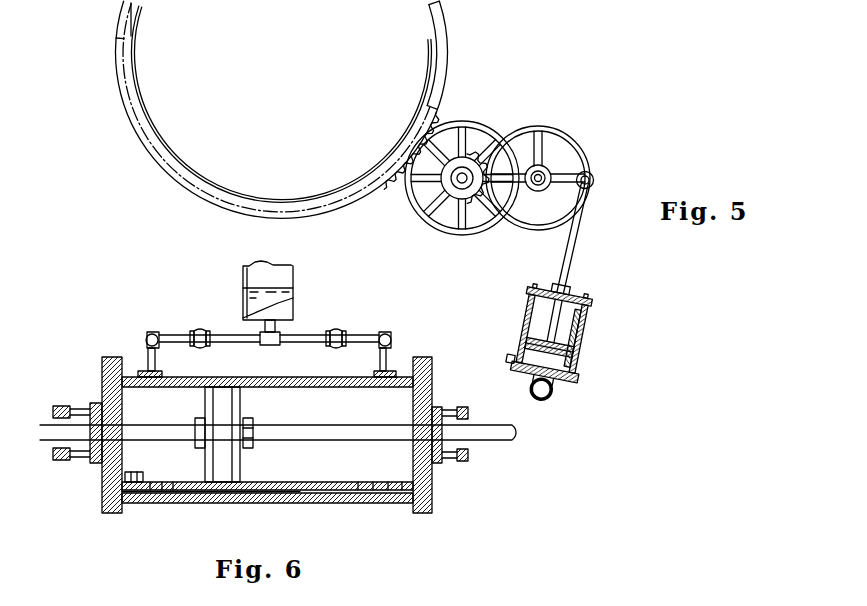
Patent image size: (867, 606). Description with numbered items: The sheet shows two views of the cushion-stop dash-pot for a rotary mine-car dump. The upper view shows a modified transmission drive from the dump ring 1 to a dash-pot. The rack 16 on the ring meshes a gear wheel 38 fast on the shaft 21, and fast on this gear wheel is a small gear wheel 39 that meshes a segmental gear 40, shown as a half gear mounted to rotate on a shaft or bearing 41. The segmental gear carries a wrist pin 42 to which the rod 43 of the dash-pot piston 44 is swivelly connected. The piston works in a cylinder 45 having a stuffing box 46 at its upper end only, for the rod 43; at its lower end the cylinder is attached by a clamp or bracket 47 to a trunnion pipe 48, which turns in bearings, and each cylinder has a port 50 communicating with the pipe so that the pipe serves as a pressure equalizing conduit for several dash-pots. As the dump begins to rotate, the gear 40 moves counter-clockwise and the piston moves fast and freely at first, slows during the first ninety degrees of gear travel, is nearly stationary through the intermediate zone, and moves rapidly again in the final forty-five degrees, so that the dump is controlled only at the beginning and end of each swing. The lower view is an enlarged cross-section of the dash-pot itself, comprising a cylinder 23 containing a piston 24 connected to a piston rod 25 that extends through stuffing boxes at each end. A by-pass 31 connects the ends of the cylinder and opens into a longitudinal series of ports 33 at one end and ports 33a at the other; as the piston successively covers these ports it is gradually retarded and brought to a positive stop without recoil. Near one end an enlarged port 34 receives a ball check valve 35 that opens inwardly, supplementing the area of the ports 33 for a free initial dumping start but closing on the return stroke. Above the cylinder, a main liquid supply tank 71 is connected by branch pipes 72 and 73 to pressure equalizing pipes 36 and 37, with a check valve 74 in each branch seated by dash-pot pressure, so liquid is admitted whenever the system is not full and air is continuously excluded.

In FIG. 5, the dump ring 1 is at (447, 51).
In FIG. 5, the rack 16 is at (368, 196).
In FIG. 5, the shaft 21 is at (460, 187).
In FIG. 5, the gear wheel 38 is at (486, 230).
In FIG. 5, the small gear wheel 39 is at (471, 162).
In FIG. 5, the segmental gear 40 is at (567, 141).
In FIG. 5, the shaft or bearing 41 is at (541, 191).
In FIG. 5, the wrist pin 42 is at (594, 179).
In FIG. 5, the rod 43 is at (581, 253).
In FIG. 5, the cylinder 45 is at (533, 330).
In FIG. 5, the stuffing box 46 is at (580, 283).
In FIG. 5, the by-pass 31 is at (600, 338).
In FIG. 6, the by-pass 31 is at (218, 500).
In FIG. 5, the dash-pot piston 44 is at (563, 375).
In FIG. 5, the check valve 35 is at (563, 368).
In FIG. 6, the check valve 35 is at (134, 498).
In FIG. 5, the port 50 is at (506, 369).
In FIG. 5, the clamp or bracket 47 is at (524, 394).
In FIG. 5, the trunnion pipe 48 is at (552, 406).
In FIG. 6, the cylinder 23 is at (302, 366).
In FIG. 6, the piston 24 is at (241, 413).
In FIG. 6, the piston rod 25 is at (341, 430).
In FIG. 6, the ports 33 is at (396, 482).
In FIG. 6, the ports 33a is at (168, 481).
In FIG. 6, the enlarged port 34 is at (128, 472).
In FIG. 6, the pressure equalizing pipe 36 is at (160, 326).
In FIG. 6, the pressure equalizing pipe 37 is at (389, 334).
In FIG. 6, the main liquid supply tank 71 is at (293, 302).
In FIG. 6, the branch pipe 72 is at (229, 318).
In FIG. 6, the branch pipe 73 is at (312, 333).
In FIG. 6, the check valve 74 is at (349, 331).